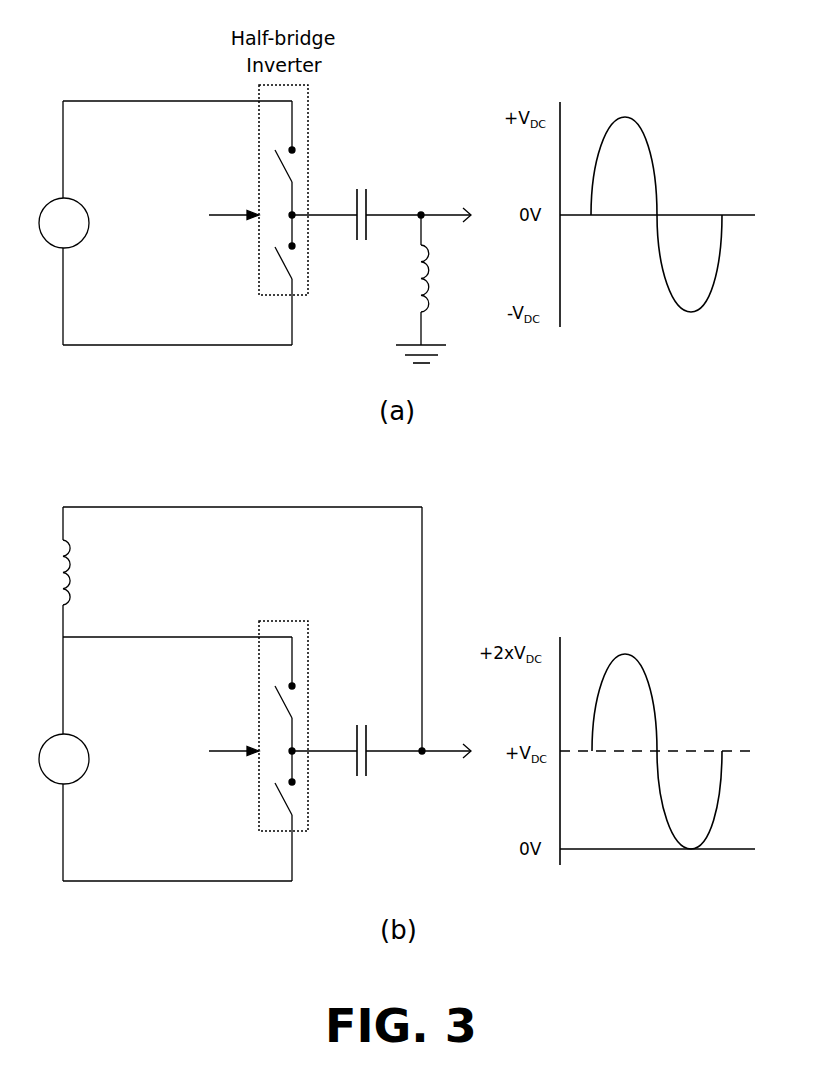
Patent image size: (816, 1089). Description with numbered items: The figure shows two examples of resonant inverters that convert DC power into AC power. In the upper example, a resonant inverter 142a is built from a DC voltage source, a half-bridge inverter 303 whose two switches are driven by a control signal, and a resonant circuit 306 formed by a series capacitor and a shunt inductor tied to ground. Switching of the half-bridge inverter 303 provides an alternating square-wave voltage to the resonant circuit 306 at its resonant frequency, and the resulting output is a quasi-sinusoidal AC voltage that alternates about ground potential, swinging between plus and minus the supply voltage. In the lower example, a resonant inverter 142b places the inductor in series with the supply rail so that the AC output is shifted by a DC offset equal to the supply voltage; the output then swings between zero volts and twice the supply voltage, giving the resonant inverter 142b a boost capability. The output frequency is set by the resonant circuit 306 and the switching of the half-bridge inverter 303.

The resonant inverter 142a is at (353, 71).
The half-bridge inverter 303 is at (257, 260).
The resonant circuit 306 is at (375, 323).
The resonant inverter 142b is at (450, 524).